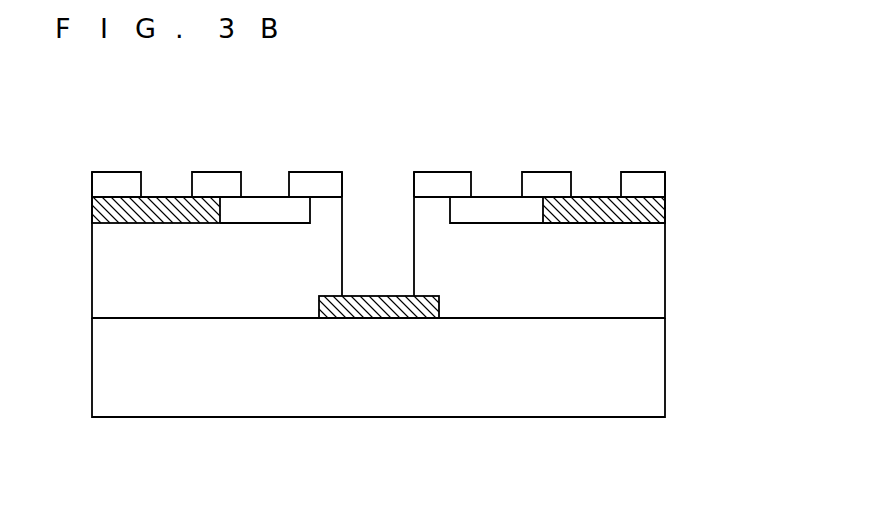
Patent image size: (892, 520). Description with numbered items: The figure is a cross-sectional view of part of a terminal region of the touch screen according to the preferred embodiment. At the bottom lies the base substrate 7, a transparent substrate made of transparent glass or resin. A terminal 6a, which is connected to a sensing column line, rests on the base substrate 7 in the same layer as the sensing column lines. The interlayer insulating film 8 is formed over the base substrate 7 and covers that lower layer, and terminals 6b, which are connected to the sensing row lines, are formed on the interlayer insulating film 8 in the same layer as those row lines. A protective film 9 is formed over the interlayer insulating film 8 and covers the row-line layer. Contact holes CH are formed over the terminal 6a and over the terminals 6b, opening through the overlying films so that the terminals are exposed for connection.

The base substrate 7 is at (655, 385).
The interlayer insulating film 8 is at (655, 275).
The protective film 9 is at (656, 184).
The terminal 6a is at (370, 312).
The terminals 6b is at (655, 210).
The contact holes CH is at (170, 180).